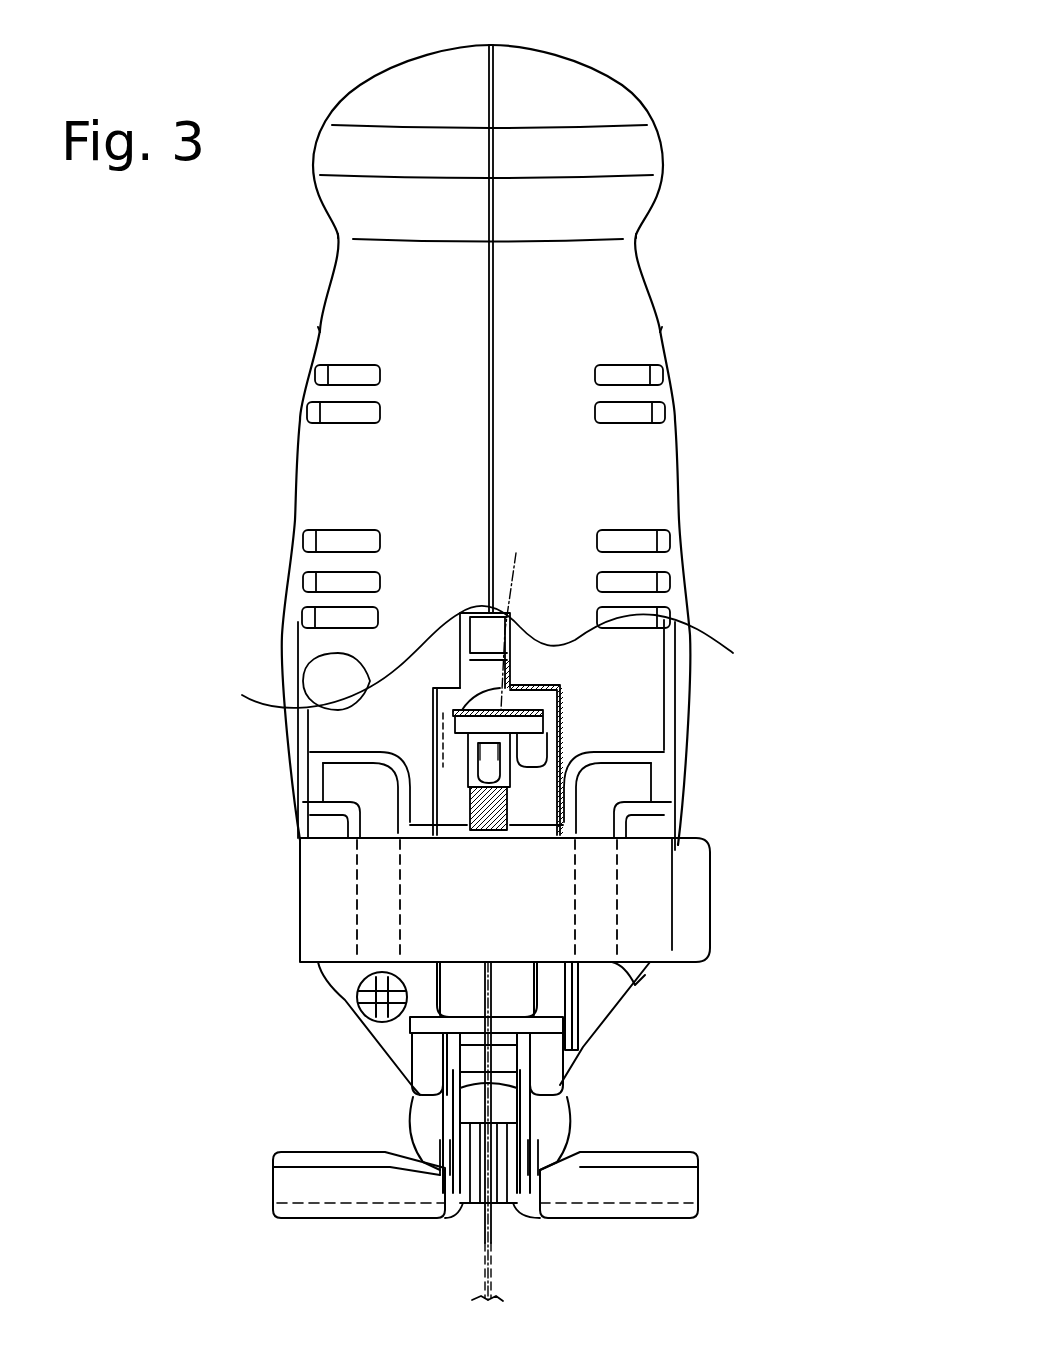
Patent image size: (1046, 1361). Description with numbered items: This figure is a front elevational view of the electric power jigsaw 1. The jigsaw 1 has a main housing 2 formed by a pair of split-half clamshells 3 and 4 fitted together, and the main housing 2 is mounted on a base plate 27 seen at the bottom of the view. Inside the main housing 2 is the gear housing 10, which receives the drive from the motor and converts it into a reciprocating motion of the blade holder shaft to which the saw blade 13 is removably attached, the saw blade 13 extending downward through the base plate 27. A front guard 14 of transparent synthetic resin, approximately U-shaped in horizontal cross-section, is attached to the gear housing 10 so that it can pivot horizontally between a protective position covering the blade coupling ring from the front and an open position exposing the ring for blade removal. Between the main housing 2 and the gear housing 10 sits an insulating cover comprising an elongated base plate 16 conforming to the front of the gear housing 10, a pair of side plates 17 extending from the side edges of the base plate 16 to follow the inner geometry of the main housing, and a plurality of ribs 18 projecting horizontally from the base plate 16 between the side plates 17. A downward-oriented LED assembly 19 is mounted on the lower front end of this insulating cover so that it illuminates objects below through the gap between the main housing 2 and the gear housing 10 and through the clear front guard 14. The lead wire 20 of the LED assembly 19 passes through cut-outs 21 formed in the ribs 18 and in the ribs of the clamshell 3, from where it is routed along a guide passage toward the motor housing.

The jigsaw 1 is at (670, 114).
The main housing 2 is at (655, 209).
The split-half clamshell 3 is at (643, 330).
The split-half clamshell 4 is at (335, 305).
The gear housing 10 is at (643, 680).
The saw blade 13 is at (487, 1063).
The front guard 14 is at (650, 915).
The base plate 16 is at (481, 613).
The side plates 17 is at (461, 617).
The ribs 18 is at (478, 658).
The LED assembly 19 is at (487, 832).
The lead wire 20 is at (520, 610).
The cut-outs 21 is at (512, 645).
The base plate 27 is at (645, 1175).